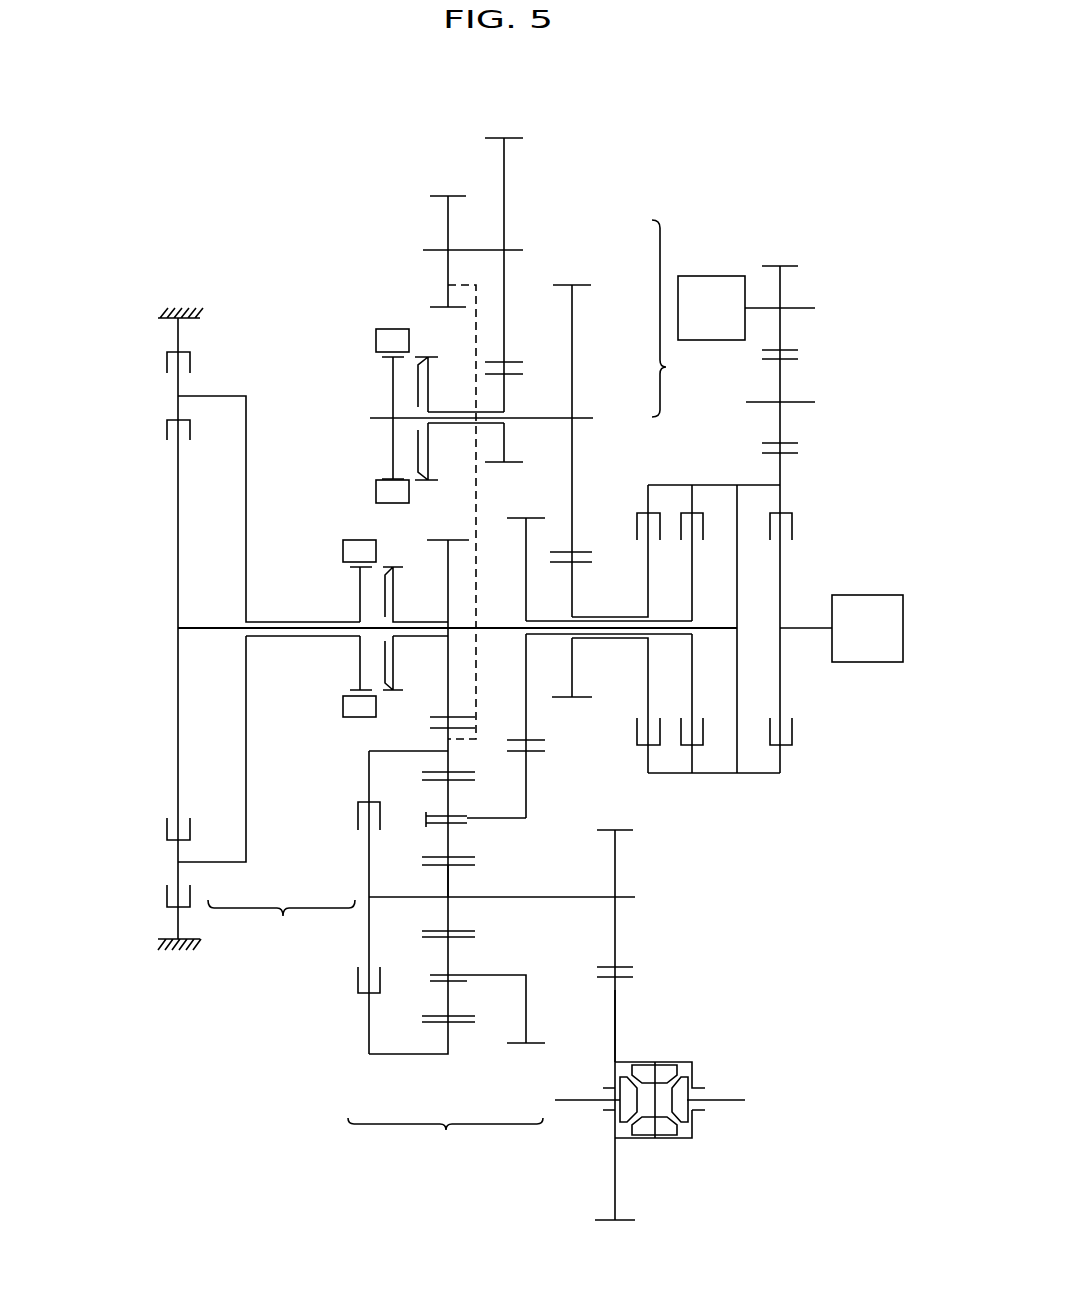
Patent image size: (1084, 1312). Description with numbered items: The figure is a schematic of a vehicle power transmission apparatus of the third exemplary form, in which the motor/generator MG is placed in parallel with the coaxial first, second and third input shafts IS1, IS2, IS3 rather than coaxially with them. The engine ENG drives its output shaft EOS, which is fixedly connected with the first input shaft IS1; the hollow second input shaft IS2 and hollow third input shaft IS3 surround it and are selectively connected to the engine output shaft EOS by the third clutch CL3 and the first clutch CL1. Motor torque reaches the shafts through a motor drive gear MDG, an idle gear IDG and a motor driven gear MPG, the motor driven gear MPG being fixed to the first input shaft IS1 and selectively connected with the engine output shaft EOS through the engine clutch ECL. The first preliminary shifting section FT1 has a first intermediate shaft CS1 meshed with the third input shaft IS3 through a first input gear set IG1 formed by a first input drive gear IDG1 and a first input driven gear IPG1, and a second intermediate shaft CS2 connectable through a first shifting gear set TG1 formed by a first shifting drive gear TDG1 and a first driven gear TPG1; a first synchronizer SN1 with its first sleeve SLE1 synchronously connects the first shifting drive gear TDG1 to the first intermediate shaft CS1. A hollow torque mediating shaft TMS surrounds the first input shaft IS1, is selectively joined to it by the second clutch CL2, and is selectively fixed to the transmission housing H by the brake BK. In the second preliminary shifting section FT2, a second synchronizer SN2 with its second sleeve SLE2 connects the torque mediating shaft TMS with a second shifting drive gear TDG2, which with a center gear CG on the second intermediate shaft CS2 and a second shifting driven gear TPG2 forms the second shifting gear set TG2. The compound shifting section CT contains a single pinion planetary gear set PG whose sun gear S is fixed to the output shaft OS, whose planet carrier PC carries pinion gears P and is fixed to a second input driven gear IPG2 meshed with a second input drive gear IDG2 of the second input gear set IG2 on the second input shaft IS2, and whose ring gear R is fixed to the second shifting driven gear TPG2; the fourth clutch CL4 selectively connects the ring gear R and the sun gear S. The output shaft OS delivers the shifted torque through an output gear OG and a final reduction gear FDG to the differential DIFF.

The first shifting gear set TG1 is at (526, 124).
The center gear CG is at (450, 223).
The first driven gear TPG1 is at (506, 175).
The second intermediate shaft CS2 is at (481, 250).
The first input gear set IG1 is at (588, 266).
The first input driven gear IPG1 is at (574, 328).
The first shifting drive gear TDG1 is at (506, 393).
The first preliminary shifting section FT1 is at (679, 318).
The motor/generator MG is at (746, 308).
The motor drive gear MDG is at (782, 288).
The idle gear IDG is at (782, 379).
The motor driven gear MPG is at (782, 468).
The engine clutch ECL is at (808, 526).
The first clutch CL1 is at (637, 500).
The third clutch CL3 is at (682, 500).
The engine ENG is at (867, 628).
The engine output shaft EOS is at (810, 633).
The first input shaft IS1 is at (500, 625).
The second input shaft IS2 is at (623, 637).
The third input shaft IS3 is at (623, 619).
The first input drive gear IDG1 is at (574, 590).
The second input drive gear IDG2 is at (524, 558).
The second shifting gear set TG2 is at (449, 518).
The first intermediate shaft CS1 is at (514, 433).
The transmission housing H is at (177, 308).
The brake BK is at (157, 353).
The second clutch CL2 is at (157, 424).
The first synchronizer SN1 is at (367, 318).
The first sleeve SLE1 is at (392, 333).
The second sleeve SLE2 is at (355, 545).
The second shifting drive gear TDG2 is at (446, 595).
The torque mediating shaft TMS is at (290, 635).
The second synchronizer SN2 is at (336, 732).
The second shifting driven gear TPG2 is at (447, 730).
The ring gear R is at (433, 769).
The pinion gears P is at (447, 843).
The sun gear S is at (447, 880).
The planet carrier PC is at (507, 820).
The second input driven gear IPG2 is at (527, 766).
The second input gear set IG2 is at (548, 792).
The output shaft OS is at (559, 899).
The output gear OG is at (617, 932).
The final reduction gear FDG is at (617, 1008).
The differential DIFF is at (712, 1062).
The planetary gear set PG is at (412, 1035).
The compound shifting section CT is at (445, 1145).
The second preliminary shifting section FT2 is at (281, 926).
The fourth clutch CL4 is at (348, 997).